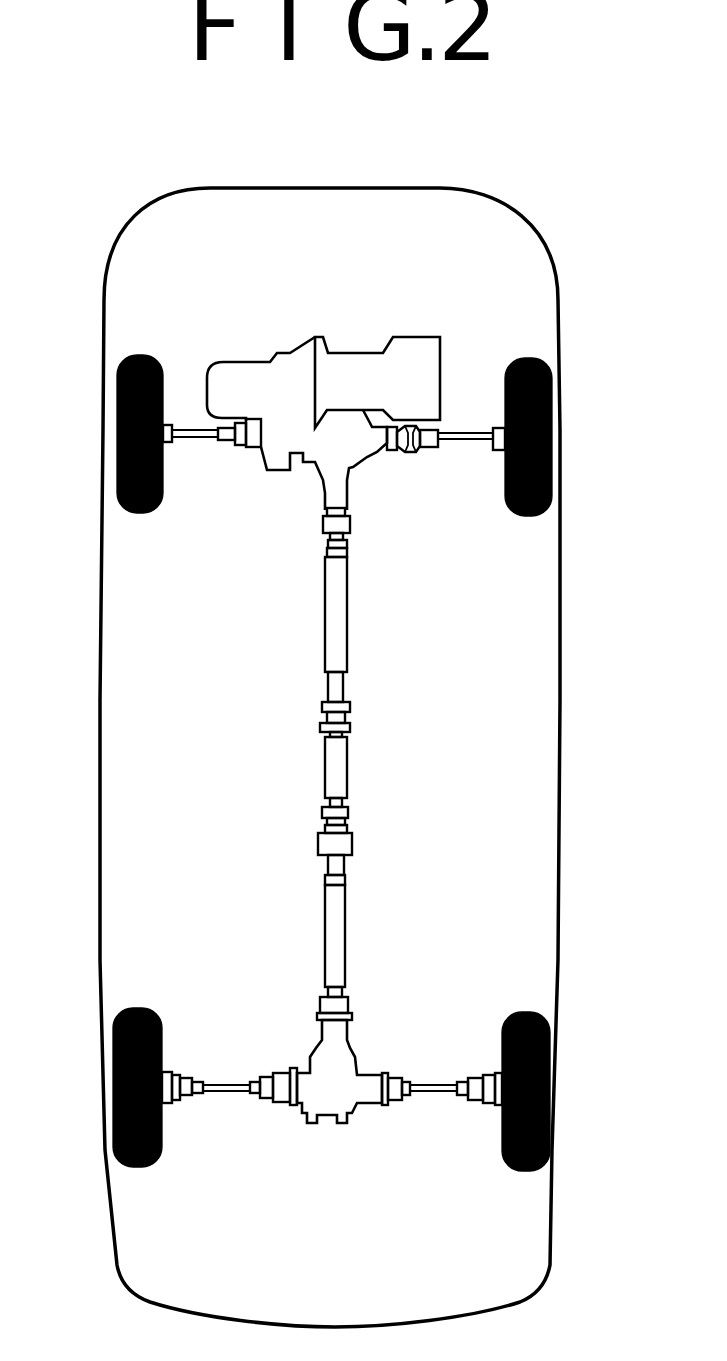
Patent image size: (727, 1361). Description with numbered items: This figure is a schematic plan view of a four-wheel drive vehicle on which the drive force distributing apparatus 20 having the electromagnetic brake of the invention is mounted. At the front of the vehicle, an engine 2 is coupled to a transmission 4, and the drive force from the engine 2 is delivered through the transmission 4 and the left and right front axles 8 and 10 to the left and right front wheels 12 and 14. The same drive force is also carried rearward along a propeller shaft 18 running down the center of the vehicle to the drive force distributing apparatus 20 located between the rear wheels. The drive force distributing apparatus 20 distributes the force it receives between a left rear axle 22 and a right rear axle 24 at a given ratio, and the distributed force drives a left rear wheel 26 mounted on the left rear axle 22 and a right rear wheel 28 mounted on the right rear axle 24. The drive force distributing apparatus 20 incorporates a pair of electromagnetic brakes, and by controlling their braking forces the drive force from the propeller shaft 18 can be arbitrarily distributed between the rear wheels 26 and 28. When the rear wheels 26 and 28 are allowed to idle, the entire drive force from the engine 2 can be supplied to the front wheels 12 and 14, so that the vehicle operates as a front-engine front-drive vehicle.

The engine 2 is at (366, 357).
The transmission 4 is at (251, 368).
The left front axle 8 is at (200, 437).
The right front axle 10 is at (460, 445).
The left front wheel 12 is at (117, 435).
The right front wheel 14 is at (553, 437).
The propeller shaft 18 is at (345, 772).
The drive force distributing apparatus 20 is at (366, 1052).
The left rear axle 22 is at (228, 1088).
The right rear axle 24 is at (435, 1093).
The left rear wheel 26 is at (113, 1088).
The right rear wheel 28 is at (552, 1085).